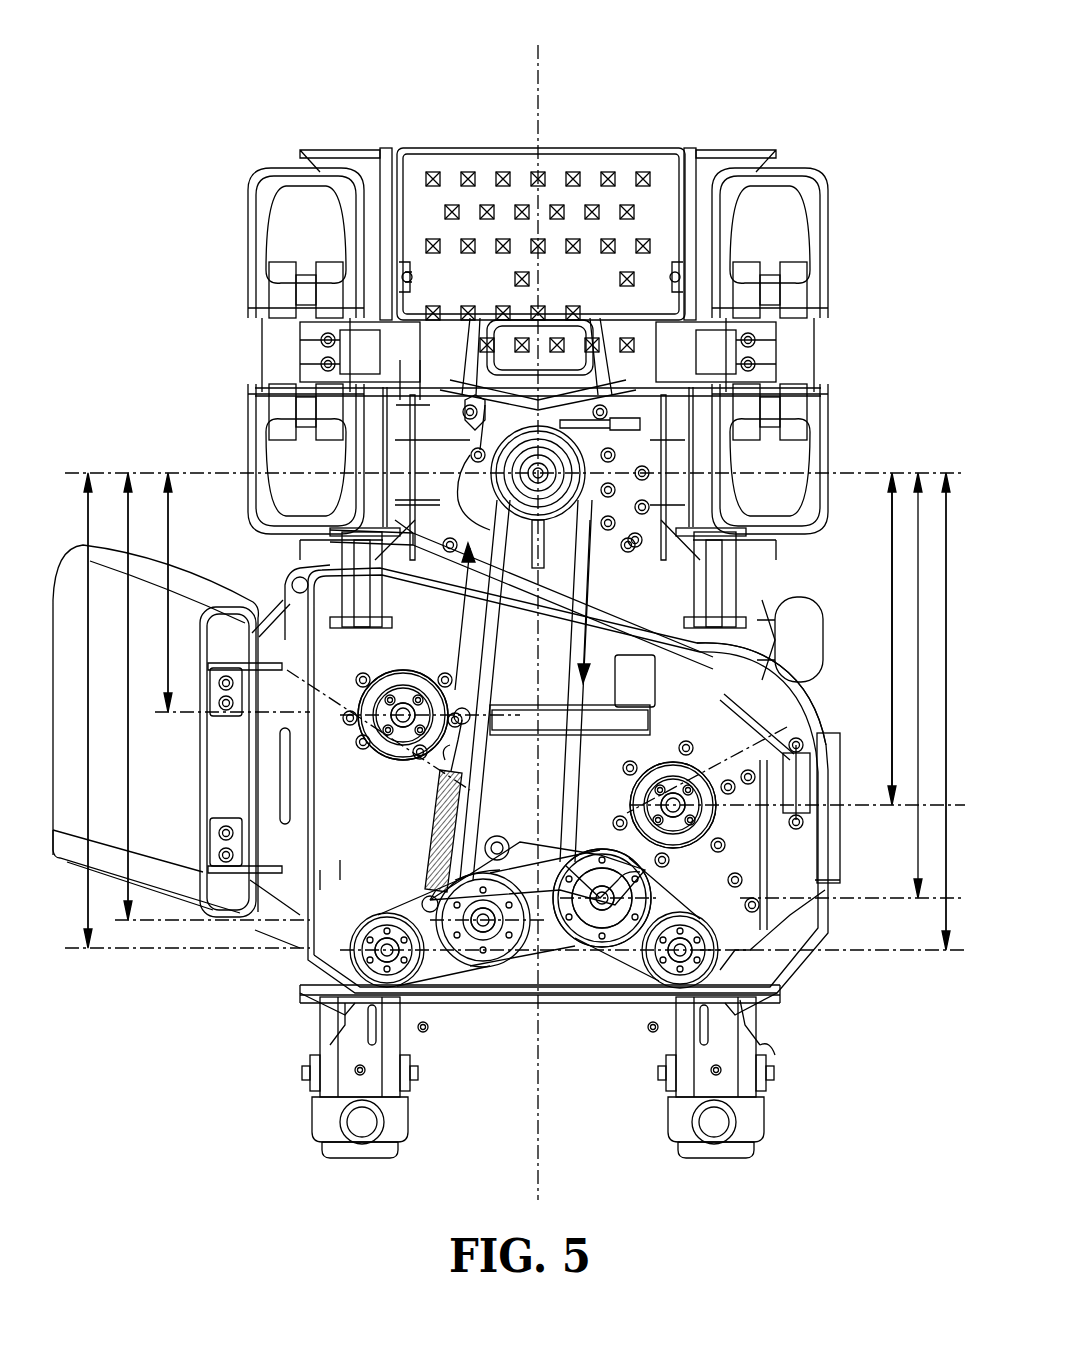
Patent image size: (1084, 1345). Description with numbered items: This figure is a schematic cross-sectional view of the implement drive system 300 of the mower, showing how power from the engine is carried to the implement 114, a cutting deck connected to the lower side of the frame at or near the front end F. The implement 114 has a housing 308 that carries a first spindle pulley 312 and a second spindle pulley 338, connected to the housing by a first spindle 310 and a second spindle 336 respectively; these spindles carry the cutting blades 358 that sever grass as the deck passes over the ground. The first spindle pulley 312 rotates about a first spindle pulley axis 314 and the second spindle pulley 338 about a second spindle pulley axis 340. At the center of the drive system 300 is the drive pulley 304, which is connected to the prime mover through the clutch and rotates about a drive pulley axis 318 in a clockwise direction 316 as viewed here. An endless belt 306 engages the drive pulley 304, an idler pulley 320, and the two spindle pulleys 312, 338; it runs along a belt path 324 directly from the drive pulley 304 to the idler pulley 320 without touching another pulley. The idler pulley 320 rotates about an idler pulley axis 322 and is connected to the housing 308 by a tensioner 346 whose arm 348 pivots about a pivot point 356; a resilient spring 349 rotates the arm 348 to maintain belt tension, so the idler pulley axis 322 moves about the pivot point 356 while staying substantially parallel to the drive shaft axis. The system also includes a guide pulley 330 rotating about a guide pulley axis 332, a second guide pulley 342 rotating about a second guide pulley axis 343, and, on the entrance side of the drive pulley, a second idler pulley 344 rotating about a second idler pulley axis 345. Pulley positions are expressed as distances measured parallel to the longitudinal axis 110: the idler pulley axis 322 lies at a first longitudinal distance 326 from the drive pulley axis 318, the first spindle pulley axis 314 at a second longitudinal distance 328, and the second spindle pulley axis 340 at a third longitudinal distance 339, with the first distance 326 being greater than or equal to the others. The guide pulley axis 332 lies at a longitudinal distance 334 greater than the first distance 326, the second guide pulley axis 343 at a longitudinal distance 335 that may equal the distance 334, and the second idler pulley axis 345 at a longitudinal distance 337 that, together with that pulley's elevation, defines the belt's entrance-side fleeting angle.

The implement drive system 300 is at (733, 66).
The longitudinal axis 110 is at (538, 62).
The drive pulley 304 is at (556, 398).
The endless belt 306 is at (588, 395).
The clockwise direction 316 is at (512, 398).
The drive pulley axis 318 is at (485, 400).
The belt path 324 is at (480, 618).
The second longitudinal distance 328 is at (892, 520).
The third longitudinal distance 339 is at (168, 520).
The cutting blades 358 is at (290, 650).
The implement 114 is at (790, 710).
The second spindle pulley axis 340 is at (403, 700).
The second spindle pulley 338 is at (380, 750).
The second spindle 336 is at (405, 730).
The first spindle pulley 312 is at (673, 795).
The first spindle pulley axis 314 is at (672, 800).
The first spindle 310 is at (700, 810).
The resilient spring 349 is at (432, 820).
The pivot point 356 is at (507, 840).
The first longitudinal distance 326 is at (918, 835).
The longitudinal distance 334 is at (946, 895).
The longitudinal distance 335 is at (88, 895).
The longitudinal distance 337 is at (128, 910).
The second guide pulley 342 is at (415, 960).
The second guide pulley axis 343 is at (395, 1000).
The second idler pulley 344 is at (485, 970).
The second idler pulley axis 345 is at (470, 975).
The tensioner 346 is at (555, 950).
The arm 348 is at (575, 960).
The idler pulley 320 is at (610, 950).
The idler pulley axis 322 is at (615, 960).
The guide pulley 330 is at (745, 990).
The guide pulley axis 332 is at (755, 1000).
The housing 308 is at (812, 955).
The front end F is at (775, 1055).